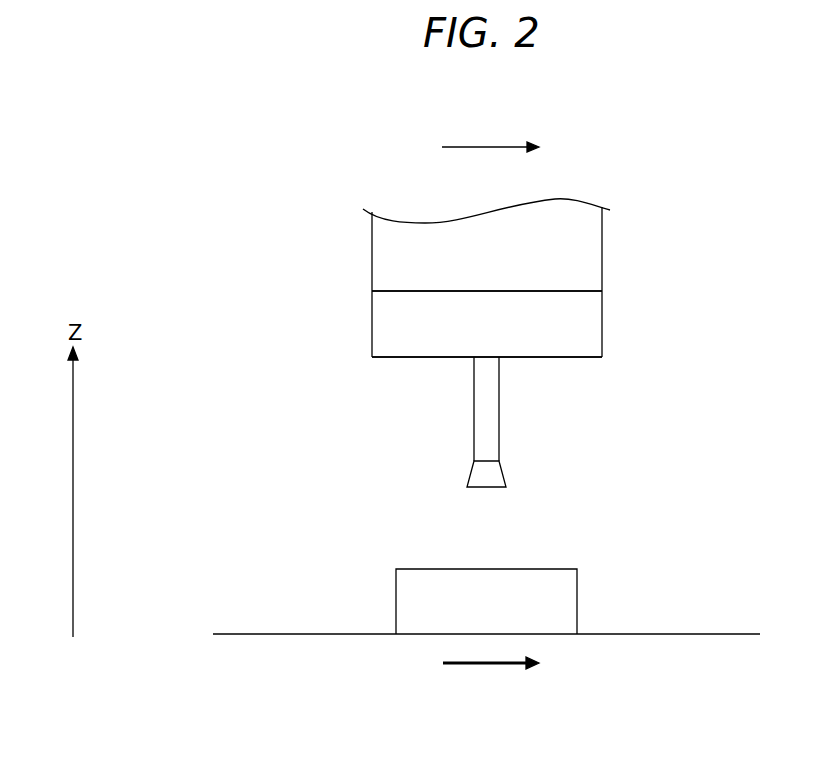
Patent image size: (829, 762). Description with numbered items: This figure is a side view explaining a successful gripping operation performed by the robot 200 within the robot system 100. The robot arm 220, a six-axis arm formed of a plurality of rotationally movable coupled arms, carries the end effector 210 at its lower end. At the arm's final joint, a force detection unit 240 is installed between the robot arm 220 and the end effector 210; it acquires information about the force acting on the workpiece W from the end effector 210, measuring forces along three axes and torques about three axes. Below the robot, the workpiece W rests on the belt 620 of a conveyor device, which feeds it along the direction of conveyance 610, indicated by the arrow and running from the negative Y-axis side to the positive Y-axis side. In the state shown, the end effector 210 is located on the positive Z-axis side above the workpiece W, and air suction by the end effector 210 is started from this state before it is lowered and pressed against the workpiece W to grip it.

The robot system 100 is at (350, 158).
The robot 200 is at (460, 343).
The robot arm 220 is at (588, 248).
The force detection unit 240 is at (588, 318).
The end effector 210 is at (493, 412).
The belt 620 is at (486, 575).
The workpiece W is at (562, 609).
The direction of conveyance 610 is at (480, 667).